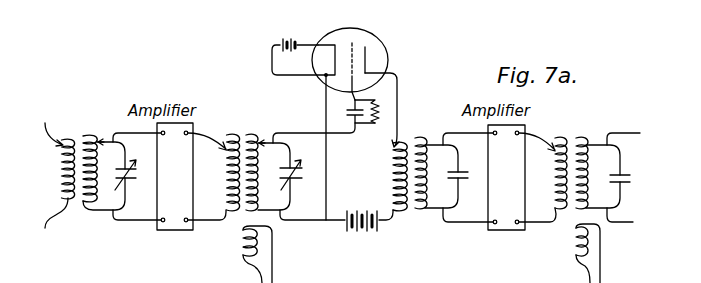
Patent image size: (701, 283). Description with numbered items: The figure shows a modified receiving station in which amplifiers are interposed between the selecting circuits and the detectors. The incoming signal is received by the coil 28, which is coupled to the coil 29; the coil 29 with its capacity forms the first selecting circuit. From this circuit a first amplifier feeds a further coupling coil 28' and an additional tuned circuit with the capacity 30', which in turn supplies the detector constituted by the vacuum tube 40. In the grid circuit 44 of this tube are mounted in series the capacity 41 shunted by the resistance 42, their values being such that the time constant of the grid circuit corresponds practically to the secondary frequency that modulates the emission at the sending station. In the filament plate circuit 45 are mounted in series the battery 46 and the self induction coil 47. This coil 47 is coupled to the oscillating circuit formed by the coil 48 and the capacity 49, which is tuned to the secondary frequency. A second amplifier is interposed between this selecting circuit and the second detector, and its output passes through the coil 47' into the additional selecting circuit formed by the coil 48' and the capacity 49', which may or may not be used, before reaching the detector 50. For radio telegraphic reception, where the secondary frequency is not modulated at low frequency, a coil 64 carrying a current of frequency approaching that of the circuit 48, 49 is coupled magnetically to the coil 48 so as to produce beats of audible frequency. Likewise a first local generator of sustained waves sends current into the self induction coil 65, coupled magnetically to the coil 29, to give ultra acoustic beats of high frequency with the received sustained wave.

The coil 28 is at (51, 175).
The coil 29 is at (110, 154).
The vacuum tube 50 is at (129, 179).
The coil 28' is at (220, 172).
The capacity 30' is at (283, 172).
The vacuum tube 40 is at (388, 70).
The capacity 41 is at (346, 113).
The resistance 42 is at (376, 111).
The grid circuit 44 is at (352, 43).
The filament plate circuit 45 is at (318, 44).
The battery 46 is at (353, 216).
The self induction coil 47 is at (384, 176).
The coil of oscillating circuit 48 is at (436, 173).
The capacity of oscillating circuit 49 is at (465, 188).
The self induction coil 47' is at (547, 173).
The coil of additional selecting circuit 48' is at (598, 173).
The capacity of additional selecting circuit 49' is at (632, 189).
The coil 64 is at (577, 247).
The self induction coil 65 is at (244, 247).